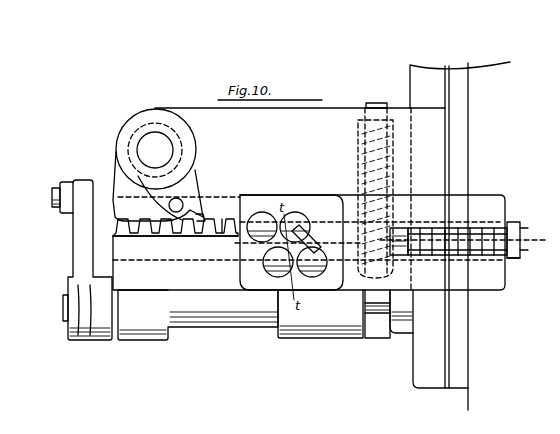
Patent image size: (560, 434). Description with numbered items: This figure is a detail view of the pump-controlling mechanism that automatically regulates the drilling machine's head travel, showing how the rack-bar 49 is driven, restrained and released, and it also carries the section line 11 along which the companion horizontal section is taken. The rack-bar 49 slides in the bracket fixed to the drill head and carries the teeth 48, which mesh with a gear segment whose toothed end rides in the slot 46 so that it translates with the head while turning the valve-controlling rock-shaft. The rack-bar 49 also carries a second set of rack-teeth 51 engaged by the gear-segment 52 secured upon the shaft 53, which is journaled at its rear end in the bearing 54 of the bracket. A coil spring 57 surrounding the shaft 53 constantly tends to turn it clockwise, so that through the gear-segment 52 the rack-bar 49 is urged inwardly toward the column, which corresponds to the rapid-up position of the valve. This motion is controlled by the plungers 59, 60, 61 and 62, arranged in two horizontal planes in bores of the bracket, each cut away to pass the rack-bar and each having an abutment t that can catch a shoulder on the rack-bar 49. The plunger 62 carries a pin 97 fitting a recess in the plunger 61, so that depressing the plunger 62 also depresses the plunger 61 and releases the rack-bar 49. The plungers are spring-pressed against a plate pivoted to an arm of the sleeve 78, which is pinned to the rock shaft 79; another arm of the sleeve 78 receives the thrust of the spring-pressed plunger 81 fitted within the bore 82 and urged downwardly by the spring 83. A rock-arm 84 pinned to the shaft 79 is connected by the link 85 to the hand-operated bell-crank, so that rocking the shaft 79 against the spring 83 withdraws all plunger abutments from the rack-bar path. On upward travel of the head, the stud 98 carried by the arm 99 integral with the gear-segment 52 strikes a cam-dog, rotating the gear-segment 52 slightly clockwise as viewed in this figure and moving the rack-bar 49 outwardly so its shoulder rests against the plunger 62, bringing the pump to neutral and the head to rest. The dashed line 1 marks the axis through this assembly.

The centerline axis 1 is at (469, 240).
The rack bar 11 is at (216, 245).
The slot 46 is at (497, 228).
The teeth 48 is at (520, 256).
The rack-bar 49 is at (406, 238).
The second set of rack-teeth 51 is at (222, 218).
The gear-segment 52 is at (201, 213).
The shaft 53 is at (155, 150).
The bearing 54 is at (160, 109).
The coil spring 57 is at (182, 137).
The plunger 59 is at (291, 242).
The plunger 60 is at (271, 273).
The plunger 61 is at (305, 222).
The plunger 62 is at (312, 272).
The sleeve 78 is at (329, 330).
The rock shaft 79 is at (235, 322).
The spring-pressed plunger 81 is at (390, 106).
The bore 82 is at (358, 133).
The spring 83 is at (364, 148).
The rock-arm 84 is at (80, 244).
The link 85 is at (68, 182).
The pin 97 is at (317, 244).
The stud 98 is at (176, 198).
The arm 99 is at (184, 176).